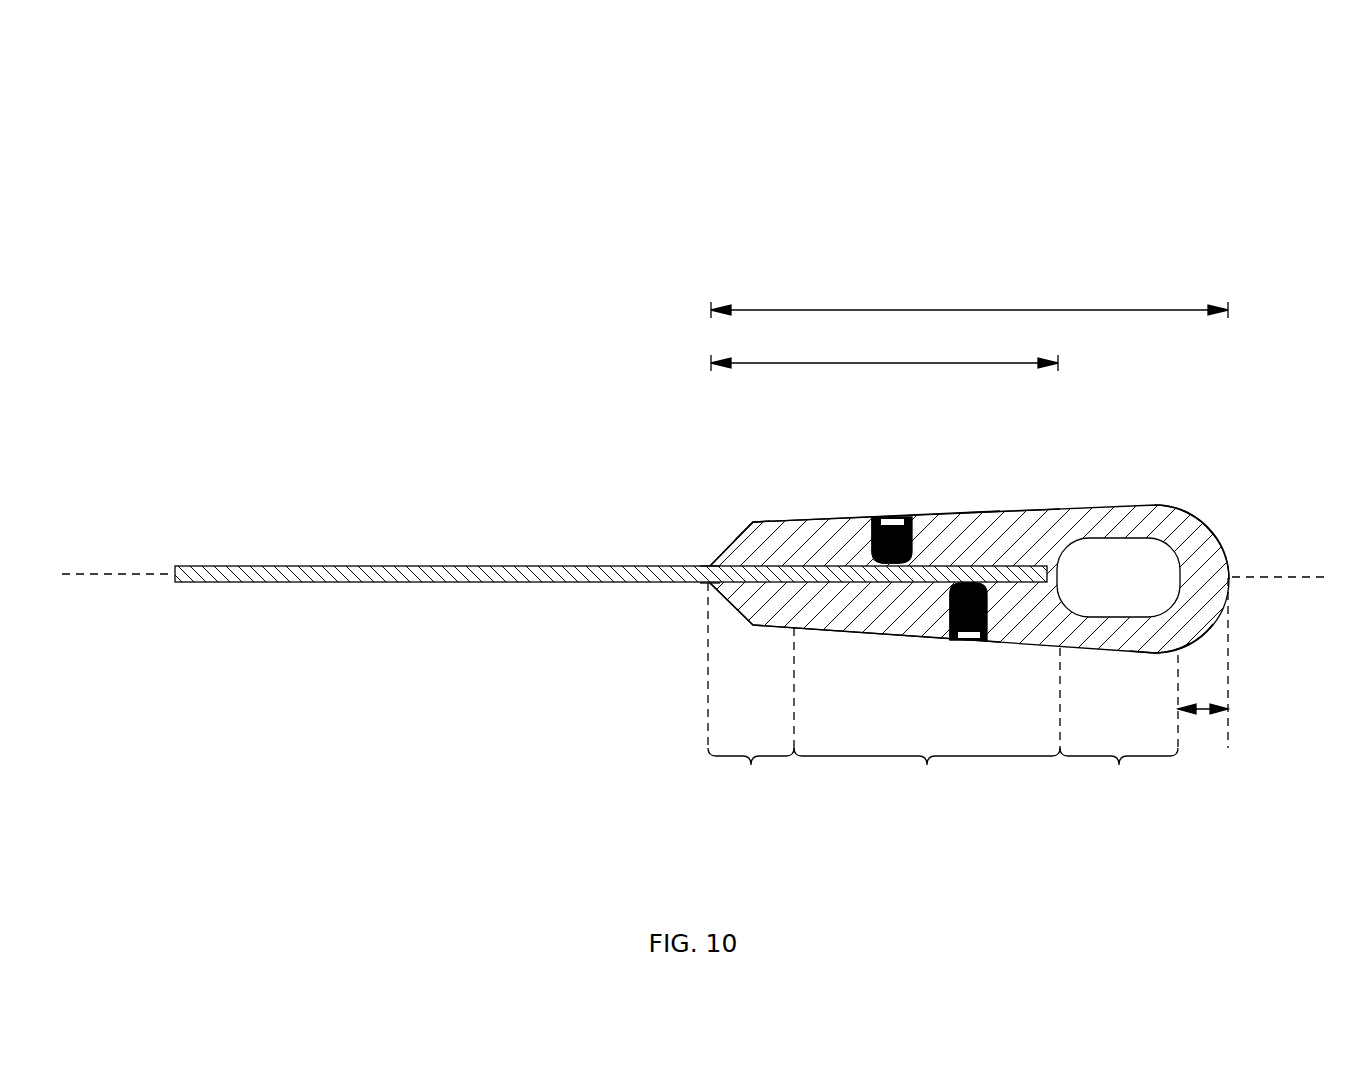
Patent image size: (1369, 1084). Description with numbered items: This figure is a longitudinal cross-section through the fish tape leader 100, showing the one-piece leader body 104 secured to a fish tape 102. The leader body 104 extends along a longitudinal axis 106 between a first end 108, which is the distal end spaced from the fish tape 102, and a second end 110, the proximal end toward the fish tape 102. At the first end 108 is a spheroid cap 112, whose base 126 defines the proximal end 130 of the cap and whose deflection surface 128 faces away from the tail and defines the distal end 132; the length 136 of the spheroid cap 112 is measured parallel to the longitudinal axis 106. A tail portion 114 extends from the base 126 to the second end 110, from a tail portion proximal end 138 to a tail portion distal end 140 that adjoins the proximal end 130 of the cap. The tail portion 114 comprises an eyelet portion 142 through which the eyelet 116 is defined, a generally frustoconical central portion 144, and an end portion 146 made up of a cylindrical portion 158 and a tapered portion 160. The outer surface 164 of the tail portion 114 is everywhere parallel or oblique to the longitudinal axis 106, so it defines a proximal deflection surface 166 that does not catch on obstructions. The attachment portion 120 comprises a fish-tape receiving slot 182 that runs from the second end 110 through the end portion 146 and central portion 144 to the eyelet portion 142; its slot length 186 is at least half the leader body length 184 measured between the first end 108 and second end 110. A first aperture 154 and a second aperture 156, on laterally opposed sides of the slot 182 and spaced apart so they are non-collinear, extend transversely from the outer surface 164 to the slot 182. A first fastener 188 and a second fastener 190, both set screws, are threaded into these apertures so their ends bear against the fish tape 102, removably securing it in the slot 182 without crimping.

The fish tape leader 100 is at (1118, 140).
The fish tape 102 is at (398, 583).
The leader body 104 is at (1148, 505).
The longitudinal axis 106 is at (110, 574).
The first end 108 is at (1230, 582).
The second end 110 is at (723, 548).
The spheroid cap 112 is at (1224, 548).
The tail portion 114 is at (810, 521).
The eyelet 116 is at (1100, 589).
The attachment portion 120 is at (748, 560).
The fish-tape receiving slot 182 is at (751, 505).
The base 126 is at (1178, 654).
The proximal end 130 is at (1239, 666).
The distal end 132 is at (1210, 487).
The deflection surface 128 is at (1220, 498).
The length 136 is at (1204, 718).
The tail portion proximal end 138 is at (710, 565).
The tail portion distal end 140 is at (1178, 654).
The eyelet portion 142 is at (1119, 771).
The central portion 144 is at (927, 721).
The end portion 146 is at (751, 689).
The first aperture 154 is at (950, 610).
The second aperture 156 is at (870, 522).
The cylindrical portion 158 is at (768, 618).
The tapered portion 160 is at (743, 603).
The outer surface 164 is at (838, 628).
The proximal deflection surface 166 is at (988, 513).
The leader body length 184 is at (880, 310).
The slot length 186 is at (862, 366).
The first fastener 188 is at (988, 612).
The second fastener 190 is at (912, 519).